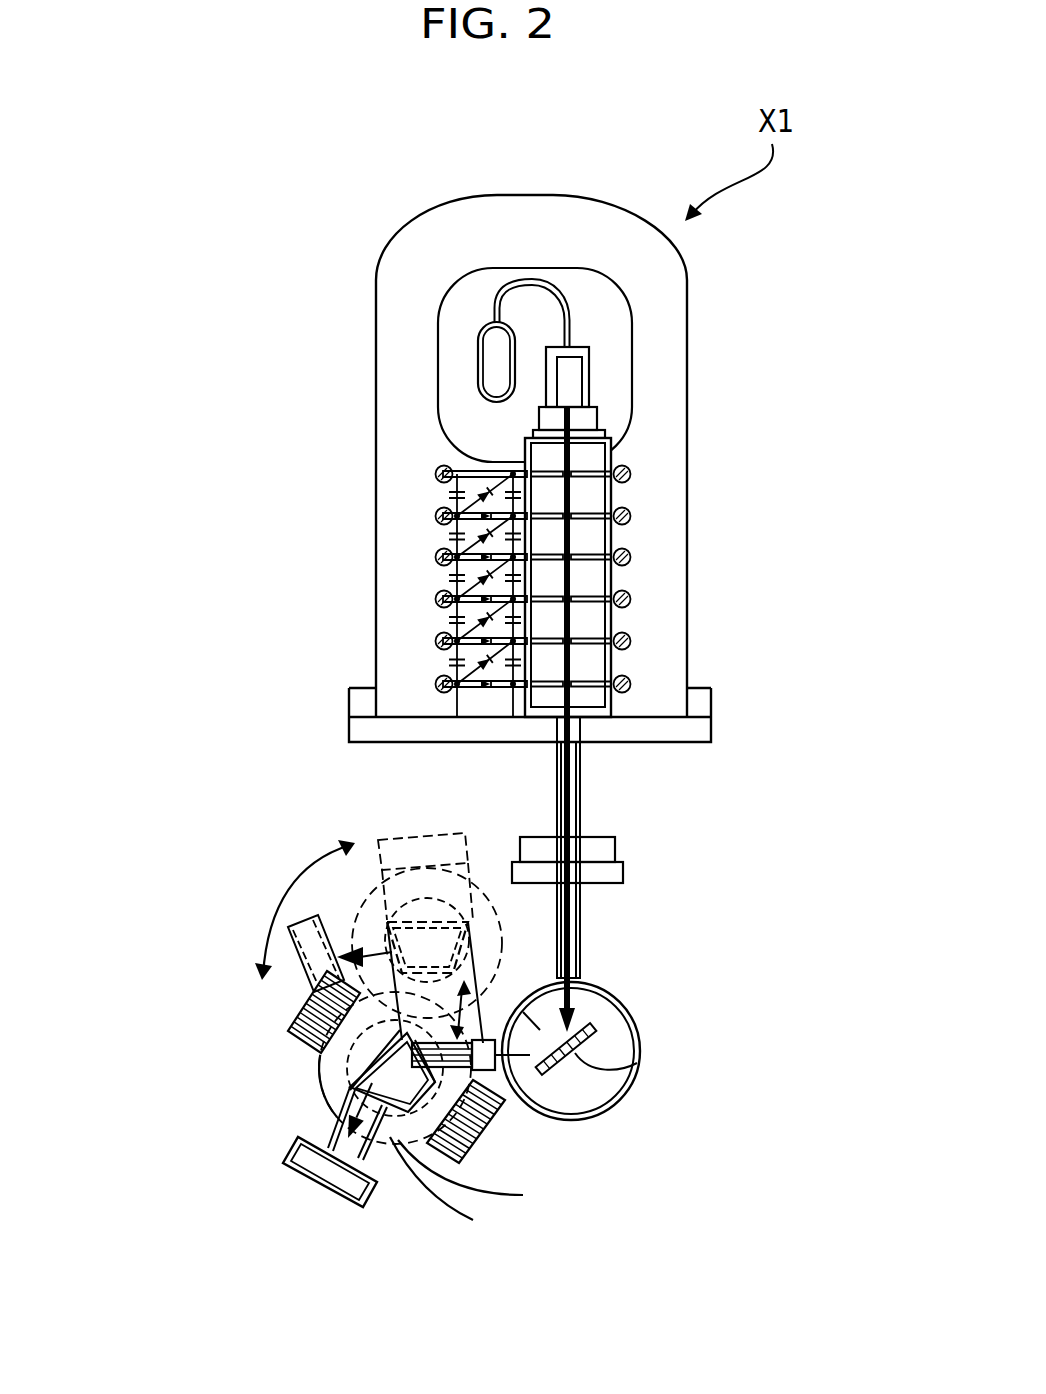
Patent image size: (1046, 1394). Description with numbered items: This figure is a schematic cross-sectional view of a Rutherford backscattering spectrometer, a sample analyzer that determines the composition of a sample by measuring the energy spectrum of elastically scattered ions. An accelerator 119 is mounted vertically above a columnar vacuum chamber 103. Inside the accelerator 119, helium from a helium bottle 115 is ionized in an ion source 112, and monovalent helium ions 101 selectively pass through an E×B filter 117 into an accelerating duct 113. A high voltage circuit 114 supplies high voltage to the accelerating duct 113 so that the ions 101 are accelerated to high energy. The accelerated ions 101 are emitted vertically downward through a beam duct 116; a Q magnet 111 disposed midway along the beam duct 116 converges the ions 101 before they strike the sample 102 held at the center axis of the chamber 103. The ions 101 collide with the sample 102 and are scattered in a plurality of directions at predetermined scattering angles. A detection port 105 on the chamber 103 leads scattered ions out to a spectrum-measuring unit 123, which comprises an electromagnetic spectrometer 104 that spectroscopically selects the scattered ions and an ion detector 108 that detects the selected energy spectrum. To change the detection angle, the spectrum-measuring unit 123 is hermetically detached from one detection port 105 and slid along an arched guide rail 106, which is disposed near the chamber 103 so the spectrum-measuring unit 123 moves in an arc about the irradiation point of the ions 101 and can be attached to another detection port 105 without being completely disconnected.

The accelerator 119 is at (687, 322).
The helium bottle 115 is at (496, 358).
The ion source 112 is at (588, 382).
The E×B filter 117 is at (598, 413).
The ion beams 101 is at (611, 628).
The accelerating duct 113 is at (611, 543).
The high voltage circuit 114 is at (430, 467).
The Q magnet 111 is at (615, 848).
The beam duct 116 is at (580, 788).
The chamber 103 is at (640, 1012).
The sample 102 is at (636, 1062).
The spectrum-measuring unit 123 is at (252, 1133).
The electromagnetic spectrometer 104 is at (318, 1058).
The detection port 105 is at (507, 1092).
The ion detector 108 is at (350, 1205).
The guide rail 106 is at (507, 1203).